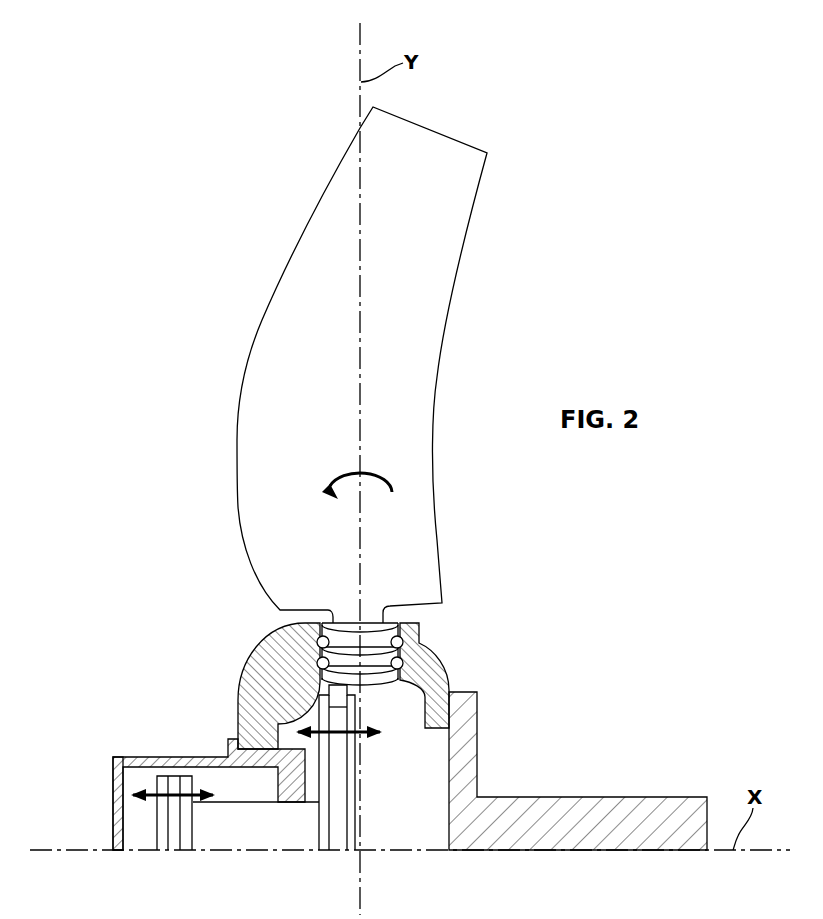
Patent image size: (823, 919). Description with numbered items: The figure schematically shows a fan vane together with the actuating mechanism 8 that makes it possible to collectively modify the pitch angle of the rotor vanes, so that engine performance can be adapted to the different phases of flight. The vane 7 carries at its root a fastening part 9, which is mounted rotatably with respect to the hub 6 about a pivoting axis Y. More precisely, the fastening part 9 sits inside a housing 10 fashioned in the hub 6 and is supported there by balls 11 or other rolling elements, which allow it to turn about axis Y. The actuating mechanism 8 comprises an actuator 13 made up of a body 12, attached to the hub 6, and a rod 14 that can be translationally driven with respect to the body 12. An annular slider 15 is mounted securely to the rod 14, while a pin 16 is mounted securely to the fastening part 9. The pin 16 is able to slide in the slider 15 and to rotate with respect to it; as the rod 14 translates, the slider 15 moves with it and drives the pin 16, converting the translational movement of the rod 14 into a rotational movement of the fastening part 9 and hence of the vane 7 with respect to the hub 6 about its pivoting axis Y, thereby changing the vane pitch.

The hub 6 is at (267, 680).
The vane 7 is at (391, 380).
The actuating mechanism 8 is at (152, 700).
The fastening part 9 is at (371, 670).
The housing 10 is at (393, 685).
The balls 11 is at (402, 662).
The body 12 is at (118, 804).
The actuator 13 is at (174, 771).
The rod 14 is at (259, 840).
The annular slider 15 is at (341, 840).
The pin 16 is at (338, 697).